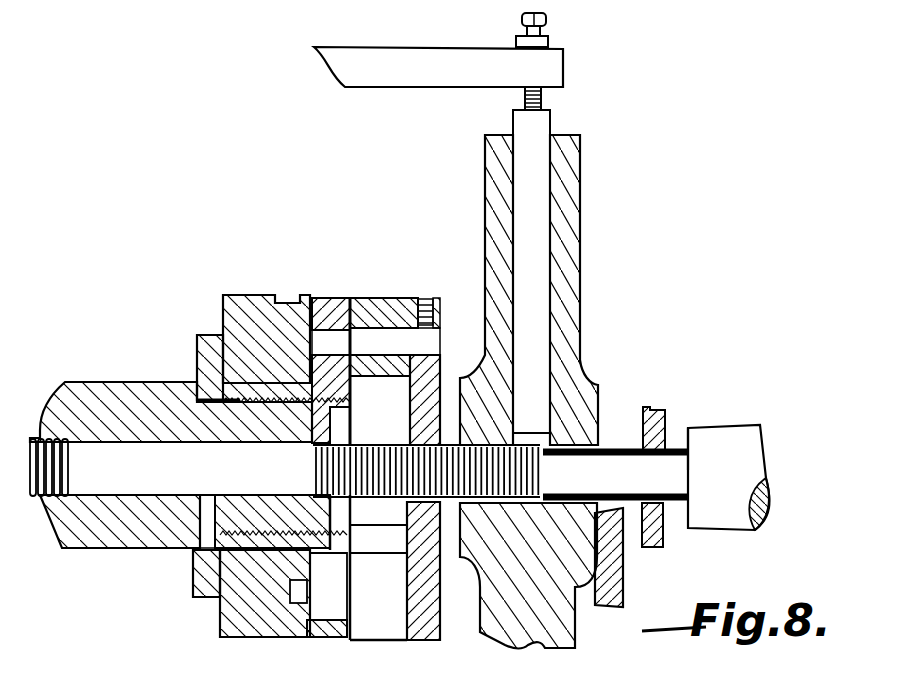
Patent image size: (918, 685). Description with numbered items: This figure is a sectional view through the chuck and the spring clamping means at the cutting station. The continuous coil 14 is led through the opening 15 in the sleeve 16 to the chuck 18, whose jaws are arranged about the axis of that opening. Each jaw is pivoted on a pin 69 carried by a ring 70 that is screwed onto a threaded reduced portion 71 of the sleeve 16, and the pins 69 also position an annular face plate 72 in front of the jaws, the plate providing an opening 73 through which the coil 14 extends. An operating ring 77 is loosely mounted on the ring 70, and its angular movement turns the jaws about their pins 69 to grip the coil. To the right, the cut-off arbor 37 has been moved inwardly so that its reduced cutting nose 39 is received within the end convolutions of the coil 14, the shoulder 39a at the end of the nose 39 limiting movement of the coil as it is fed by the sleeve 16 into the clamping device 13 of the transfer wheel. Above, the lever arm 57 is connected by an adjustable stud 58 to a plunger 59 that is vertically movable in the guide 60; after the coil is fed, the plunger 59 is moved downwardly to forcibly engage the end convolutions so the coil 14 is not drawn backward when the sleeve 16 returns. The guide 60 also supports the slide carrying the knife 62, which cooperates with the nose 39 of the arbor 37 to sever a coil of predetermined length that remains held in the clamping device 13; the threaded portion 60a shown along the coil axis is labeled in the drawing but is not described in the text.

The clamping device 13 is at (657, 410).
The coil 14 is at (33, 495).
The opening 15 is at (88, 446).
The sleeve 16 is at (56, 416).
The chuck 18 is at (180, 375).
The cut-off arbor 37 is at (748, 450).
The cutting nose 39 is at (662, 468).
The shoulder 39a is at (692, 438).
The arm 57 is at (483, 75).
The adjustable stud 58 is at (541, 98).
The plunger 59 is at (540, 233).
The guide 60 is at (490, 621).
The threaded shaft 60a is at (592, 420).
The knife 62 is at (615, 565).
The pin 69 is at (382, 335).
The ring 70 is at (332, 312).
The threaded reduced portion 71 is at (253, 413).
The annular face plate 72 is at (461, 357).
The opening 73 is at (444, 503).
The operating ring 77 is at (230, 612).